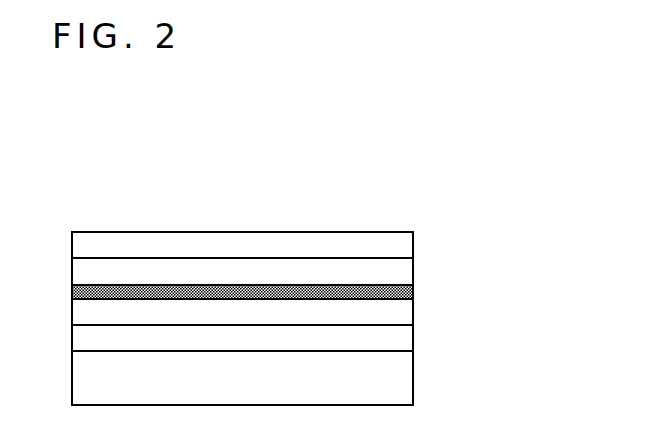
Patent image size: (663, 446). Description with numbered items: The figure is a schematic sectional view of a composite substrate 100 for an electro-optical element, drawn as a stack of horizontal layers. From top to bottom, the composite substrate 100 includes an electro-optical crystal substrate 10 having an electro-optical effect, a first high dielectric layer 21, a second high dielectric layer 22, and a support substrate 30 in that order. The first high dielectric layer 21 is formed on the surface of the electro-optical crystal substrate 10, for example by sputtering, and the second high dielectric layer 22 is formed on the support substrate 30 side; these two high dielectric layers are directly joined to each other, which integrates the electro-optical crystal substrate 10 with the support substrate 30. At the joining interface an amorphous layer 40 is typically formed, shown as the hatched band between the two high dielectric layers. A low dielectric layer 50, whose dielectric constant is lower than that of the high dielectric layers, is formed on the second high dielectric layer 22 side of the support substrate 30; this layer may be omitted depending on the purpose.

The composite substrate 100 is at (518, 124).
The electro-optical crystal substrate 10 is at (413, 240).
The first high dielectric layer 21 is at (413, 270).
The amorphous layer 40 is at (413, 288).
The second high dielectric layer 22 is at (413, 313).
The low dielectric layer 50 is at (413, 340).
The support substrate 30 is at (413, 378).